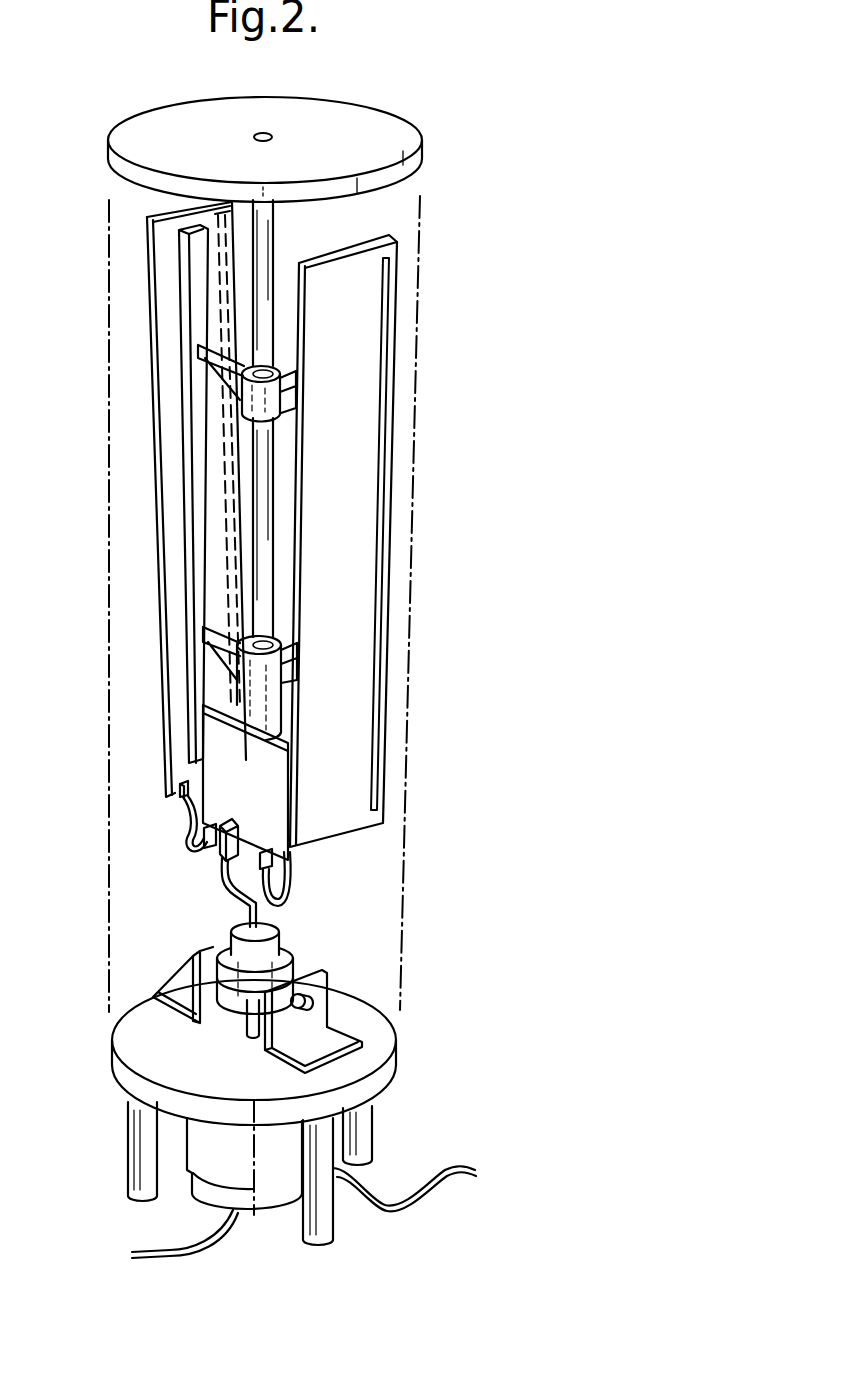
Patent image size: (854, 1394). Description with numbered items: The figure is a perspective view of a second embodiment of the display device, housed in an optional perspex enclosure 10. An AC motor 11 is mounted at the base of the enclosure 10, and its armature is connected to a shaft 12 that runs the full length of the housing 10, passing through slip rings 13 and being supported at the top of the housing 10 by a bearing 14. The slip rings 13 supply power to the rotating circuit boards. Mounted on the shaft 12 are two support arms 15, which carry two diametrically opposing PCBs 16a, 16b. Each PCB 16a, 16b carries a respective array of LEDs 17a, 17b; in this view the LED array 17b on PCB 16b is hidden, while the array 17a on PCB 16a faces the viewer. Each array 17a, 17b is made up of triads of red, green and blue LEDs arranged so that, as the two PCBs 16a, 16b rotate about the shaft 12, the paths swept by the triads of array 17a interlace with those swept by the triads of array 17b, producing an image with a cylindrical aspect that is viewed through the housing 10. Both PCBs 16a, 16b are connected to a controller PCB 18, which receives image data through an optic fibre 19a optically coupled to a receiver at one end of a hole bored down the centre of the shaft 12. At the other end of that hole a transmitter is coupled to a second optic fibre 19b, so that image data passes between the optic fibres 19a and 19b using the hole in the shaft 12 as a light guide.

The perspex enclosure 10 is at (108, 570).
The AC motor 11 is at (265, 1152).
The shaft 12 is at (268, 912).
The slip rings 13 is at (290, 968).
The bearing 14 is at (270, 132).
The support arms 15 is at (253, 396).
The PCB 16a is at (358, 332).
The PCB 16b is at (176, 496).
The LED array 17a is at (385, 447).
The LED array 17b is at (150, 214).
The controller PCB 18 is at (228, 800).
The optic fibre 19a is at (232, 894).
The optic fibre 19b is at (182, 1246).